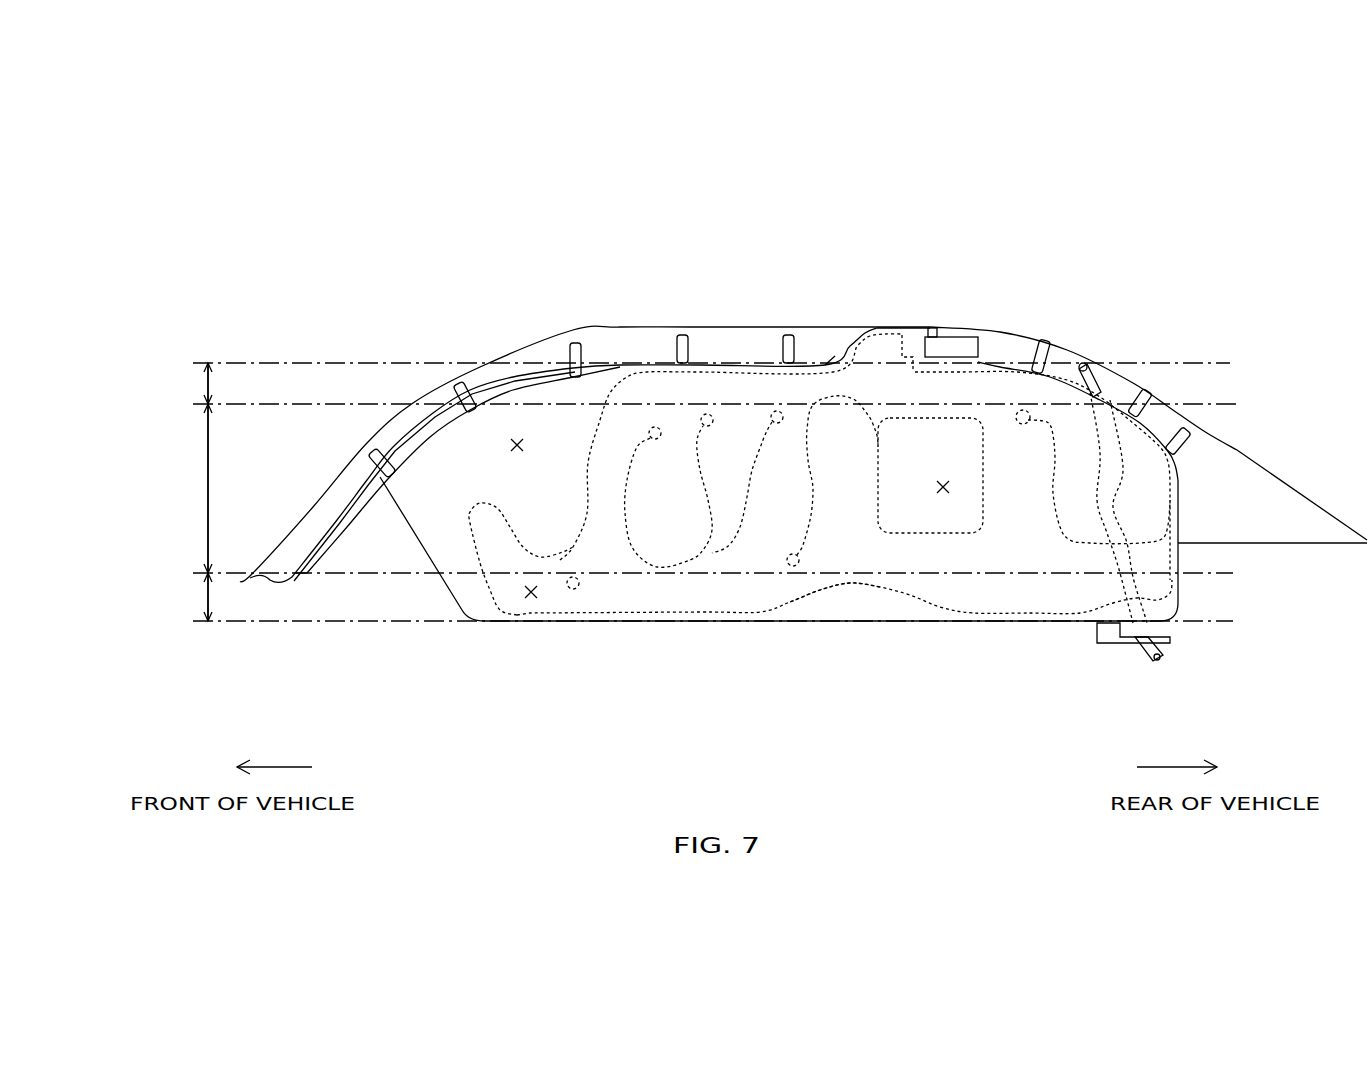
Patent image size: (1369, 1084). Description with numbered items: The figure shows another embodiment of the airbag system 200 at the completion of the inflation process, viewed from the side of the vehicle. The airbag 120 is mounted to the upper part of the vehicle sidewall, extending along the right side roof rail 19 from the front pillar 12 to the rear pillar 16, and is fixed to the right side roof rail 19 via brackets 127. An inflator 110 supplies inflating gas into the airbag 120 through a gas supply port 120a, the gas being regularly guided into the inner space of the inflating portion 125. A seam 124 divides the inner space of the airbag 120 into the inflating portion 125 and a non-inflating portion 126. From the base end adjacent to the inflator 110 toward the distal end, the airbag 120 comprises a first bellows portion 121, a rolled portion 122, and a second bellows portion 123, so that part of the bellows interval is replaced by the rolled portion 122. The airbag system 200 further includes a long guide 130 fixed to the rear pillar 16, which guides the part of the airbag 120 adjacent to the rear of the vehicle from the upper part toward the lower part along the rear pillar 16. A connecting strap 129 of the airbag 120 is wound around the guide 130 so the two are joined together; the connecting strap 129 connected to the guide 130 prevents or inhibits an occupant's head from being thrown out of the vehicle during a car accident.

The front pillar 12 is at (340, 478).
The rear pillar 16 is at (1237, 450).
The right side roof rail 19 is at (992, 325).
The inflator 110 is at (938, 335).
The airbag 120 is at (763, 623).
The gas supply port 120a is at (897, 333).
The first bellows portion 121 is at (207, 393).
The rolled portion 122 is at (207, 487).
The second bellows portion 123 is at (207, 593).
The seam 124 is at (890, 533).
The inflating portion 125 is at (532, 593).
The non-inflating portion 126 is at (517, 440).
The brackets 127 is at (462, 385).
The connecting strap 129 is at (1113, 645).
The guide 130 is at (1097, 370).
The airbag system 200 is at (828, 352).